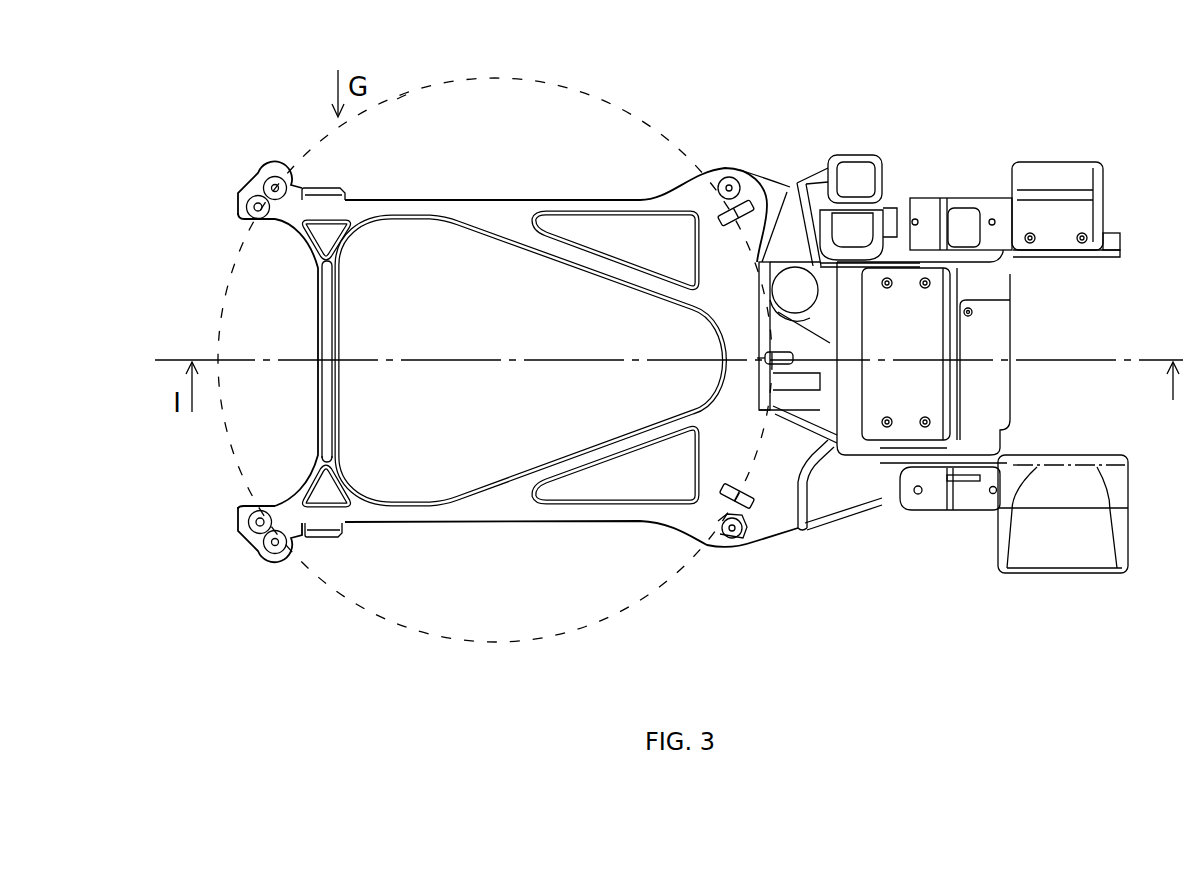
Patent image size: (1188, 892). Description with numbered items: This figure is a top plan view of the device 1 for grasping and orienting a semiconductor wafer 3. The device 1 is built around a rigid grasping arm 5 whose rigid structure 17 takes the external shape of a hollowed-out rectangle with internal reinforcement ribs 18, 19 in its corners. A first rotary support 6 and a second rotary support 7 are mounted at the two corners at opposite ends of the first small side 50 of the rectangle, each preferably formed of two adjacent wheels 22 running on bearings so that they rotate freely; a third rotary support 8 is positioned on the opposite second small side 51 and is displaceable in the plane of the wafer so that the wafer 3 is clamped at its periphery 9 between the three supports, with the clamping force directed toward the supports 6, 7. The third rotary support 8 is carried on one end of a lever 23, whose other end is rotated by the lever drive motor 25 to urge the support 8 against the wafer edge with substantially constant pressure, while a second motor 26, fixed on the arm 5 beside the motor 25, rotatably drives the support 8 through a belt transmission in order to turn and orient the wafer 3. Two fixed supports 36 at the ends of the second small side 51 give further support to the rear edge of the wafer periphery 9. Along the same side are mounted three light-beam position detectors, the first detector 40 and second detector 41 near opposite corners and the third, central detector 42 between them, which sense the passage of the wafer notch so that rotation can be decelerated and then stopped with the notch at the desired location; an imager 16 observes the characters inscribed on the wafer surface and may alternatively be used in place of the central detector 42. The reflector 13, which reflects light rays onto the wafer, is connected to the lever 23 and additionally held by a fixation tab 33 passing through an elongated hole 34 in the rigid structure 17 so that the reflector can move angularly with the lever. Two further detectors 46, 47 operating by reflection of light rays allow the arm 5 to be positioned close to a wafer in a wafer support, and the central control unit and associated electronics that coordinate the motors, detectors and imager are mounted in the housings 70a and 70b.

The device 1 is at (520, 527).
The semiconductor wafer 3 is at (230, 287).
The rigid grasping arm 5 is at (530, 198).
The first rotary support 6 is at (252, 183).
The second rotary support 7 is at (258, 555).
The third rotary support 8 is at (707, 270).
The periphery 9 is at (405, 92).
The reflector 13 is at (785, 190).
The imager 16 is at (1007, 330).
The rigid structure 17 is at (477, 198).
The internal reinforcement rib 18 is at (608, 273).
The internal reinforcement rib 19 is at (340, 247).
The adjacent wheels 22 is at (263, 172).
The lever 23 is at (795, 183).
The lever drive motor 25 is at (820, 200).
The second motor 26 is at (853, 155).
The fixation tab 33 is at (777, 430).
The elongated hole 34 is at (810, 430).
The fixed supports 36 is at (712, 178).
The first detector 40 is at (784, 430).
The second detector 41 is at (718, 215).
The third detector 42 is at (757, 354).
The detector 46 is at (328, 187).
The detector 47 is at (320, 538).
The first small side 50 is at (332, 328).
The second small side 51 is at (737, 412).
The housing 70a is at (1057, 577).
The housing 70b is at (1052, 160).